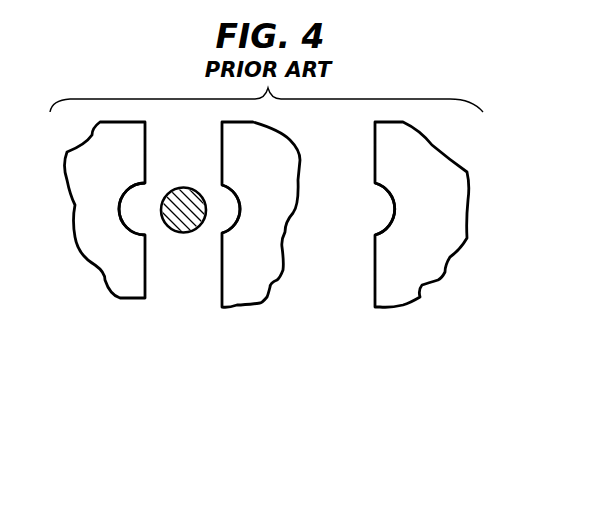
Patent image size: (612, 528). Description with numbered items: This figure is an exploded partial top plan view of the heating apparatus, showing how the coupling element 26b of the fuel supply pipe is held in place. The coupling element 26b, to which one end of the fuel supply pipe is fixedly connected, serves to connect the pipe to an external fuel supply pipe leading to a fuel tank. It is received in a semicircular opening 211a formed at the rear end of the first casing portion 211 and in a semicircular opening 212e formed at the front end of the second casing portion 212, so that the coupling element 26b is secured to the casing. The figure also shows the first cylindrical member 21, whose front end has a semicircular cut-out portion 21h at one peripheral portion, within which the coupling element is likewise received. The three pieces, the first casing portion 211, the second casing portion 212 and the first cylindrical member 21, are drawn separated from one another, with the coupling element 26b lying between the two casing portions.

The first casing portion 211 is at (113, 272).
The semicircular opening 211a is at (122, 212).
The coupling element 26b is at (183, 235).
The second casing portion 212 is at (247, 270).
The semicircular opening 212e is at (233, 208).
The first cylindrical member 21 is at (428, 272).
The semicircular cut-out portion 21h is at (398, 208).